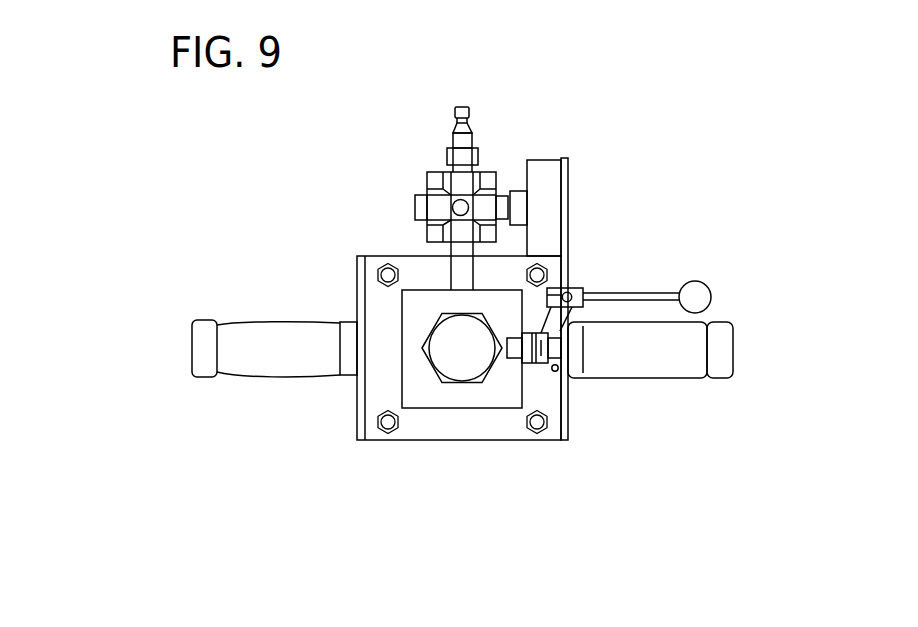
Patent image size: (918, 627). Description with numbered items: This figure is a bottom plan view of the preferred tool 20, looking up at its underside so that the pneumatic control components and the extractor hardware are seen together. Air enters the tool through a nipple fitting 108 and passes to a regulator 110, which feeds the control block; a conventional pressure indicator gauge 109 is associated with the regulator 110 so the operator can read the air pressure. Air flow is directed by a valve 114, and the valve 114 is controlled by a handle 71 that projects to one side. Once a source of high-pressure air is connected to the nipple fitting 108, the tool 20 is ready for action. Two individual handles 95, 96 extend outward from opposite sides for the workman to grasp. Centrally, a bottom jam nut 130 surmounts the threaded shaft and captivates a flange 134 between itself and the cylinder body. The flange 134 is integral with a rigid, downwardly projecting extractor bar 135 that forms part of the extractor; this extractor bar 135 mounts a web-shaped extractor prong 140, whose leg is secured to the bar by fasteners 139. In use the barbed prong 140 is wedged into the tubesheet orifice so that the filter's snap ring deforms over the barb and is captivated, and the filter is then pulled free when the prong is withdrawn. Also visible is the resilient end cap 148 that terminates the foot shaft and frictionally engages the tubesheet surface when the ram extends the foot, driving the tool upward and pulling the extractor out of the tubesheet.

The tool 20 is at (134, 310).
The handle 71 is at (678, 268).
The handle 95 is at (640, 372).
The handle 96 is at (277, 375).
The nipple fitting 108 is at (469, 117).
The pressure indicator gauge 109 is at (570, 173).
The regulator 110 is at (410, 172).
The valve 114 is at (585, 288).
The bottom jam nut 130 is at (420, 356).
The flange 134 is at (428, 398).
The extractor bar 135 is at (527, 367).
The fasteners 139 is at (503, 360).
The extractor prong 140 is at (549, 378).
The resilient end cap 148 is at (457, 372).